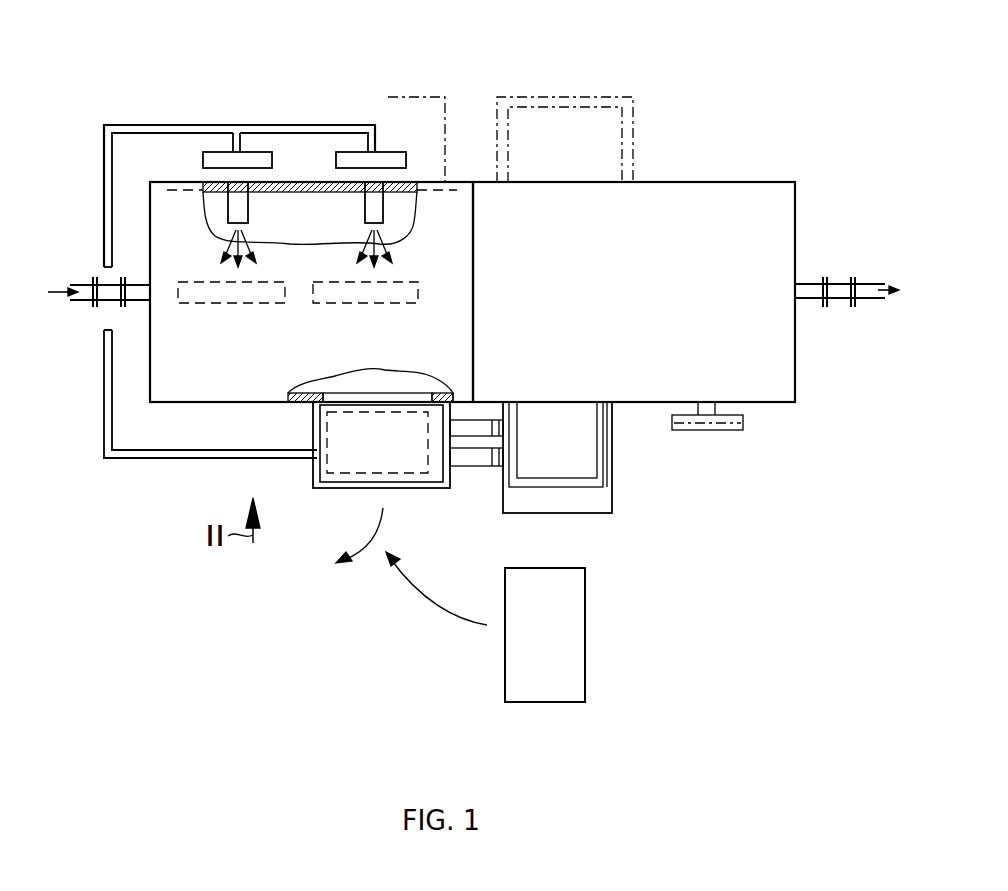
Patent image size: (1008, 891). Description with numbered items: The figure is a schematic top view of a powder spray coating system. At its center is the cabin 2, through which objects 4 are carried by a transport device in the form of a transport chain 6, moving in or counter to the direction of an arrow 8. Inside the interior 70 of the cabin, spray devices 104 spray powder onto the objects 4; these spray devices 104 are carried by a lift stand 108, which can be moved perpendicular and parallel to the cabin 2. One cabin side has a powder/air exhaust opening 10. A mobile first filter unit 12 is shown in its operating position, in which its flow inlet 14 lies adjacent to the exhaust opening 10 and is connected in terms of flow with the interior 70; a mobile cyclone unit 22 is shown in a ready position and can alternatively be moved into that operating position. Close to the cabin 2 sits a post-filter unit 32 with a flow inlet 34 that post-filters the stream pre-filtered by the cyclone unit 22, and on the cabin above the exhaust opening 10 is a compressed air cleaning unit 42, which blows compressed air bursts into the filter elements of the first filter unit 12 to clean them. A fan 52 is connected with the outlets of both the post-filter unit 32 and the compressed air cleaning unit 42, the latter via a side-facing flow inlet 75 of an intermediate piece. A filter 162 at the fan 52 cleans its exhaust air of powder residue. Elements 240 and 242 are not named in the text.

The cabin 2 is at (200, 377).
The objects 4 is at (236, 302).
The transport chain 6 is at (80, 278).
The arrow 8 is at (55, 298).
The powder/air exhaust opening 10 is at (347, 398).
The first filter unit 12 is at (314, 478).
The flow inlet 14 is at (388, 410).
The cyclone unit 22 is at (515, 680).
The post-filter unit 32 is at (607, 502).
The flow inlet 34 is at (452, 470).
The compressed air cleaning unit 42 is at (360, 477).
The fan 52 is at (603, 473).
The interior 70 is at (400, 382).
The flow inlet 75 is at (463, 400).
The spray device 104 is at (365, 211).
The lift stand 108 is at (220, 159).
The filter 162 is at (582, 447).
The carrier strip 240 is at (305, 180).
The supply line 242 is at (157, 207).